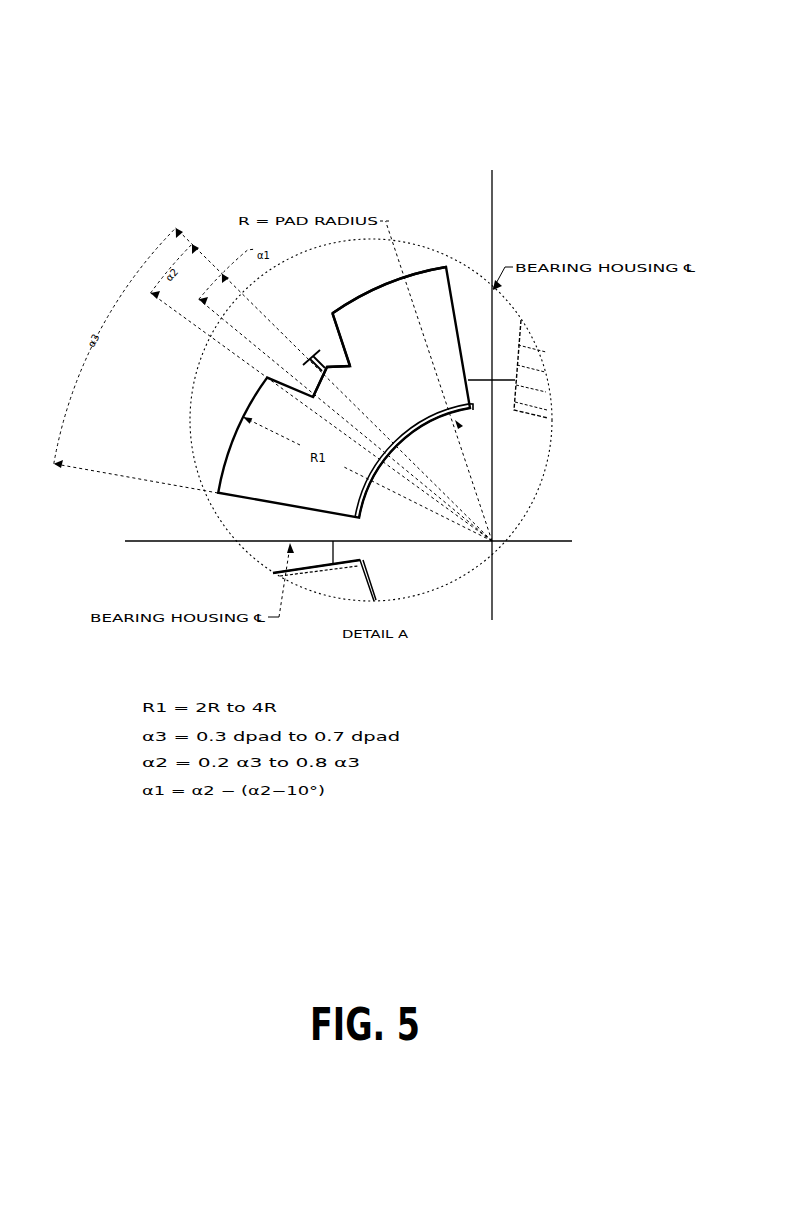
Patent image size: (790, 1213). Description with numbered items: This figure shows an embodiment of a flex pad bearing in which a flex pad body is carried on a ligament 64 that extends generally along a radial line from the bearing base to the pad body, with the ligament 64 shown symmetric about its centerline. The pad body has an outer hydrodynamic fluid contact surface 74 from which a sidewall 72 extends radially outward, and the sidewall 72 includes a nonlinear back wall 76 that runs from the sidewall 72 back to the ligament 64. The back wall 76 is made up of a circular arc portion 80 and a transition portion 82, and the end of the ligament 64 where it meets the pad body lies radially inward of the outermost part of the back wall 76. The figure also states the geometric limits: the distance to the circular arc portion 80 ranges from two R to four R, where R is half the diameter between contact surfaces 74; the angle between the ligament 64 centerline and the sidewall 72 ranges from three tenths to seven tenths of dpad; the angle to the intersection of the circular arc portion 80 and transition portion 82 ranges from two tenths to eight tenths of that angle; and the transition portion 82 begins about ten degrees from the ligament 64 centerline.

The ligament 64 is at (327, 360).
The sidewall 72 is at (453, 293).
The outer hydrodynamic fluid contact surface 74 is at (465, 417).
The back wall 76 is at (415, 270).
The circular arc portion 80 is at (383, 277).
The transition portion 82 is at (347, 337).